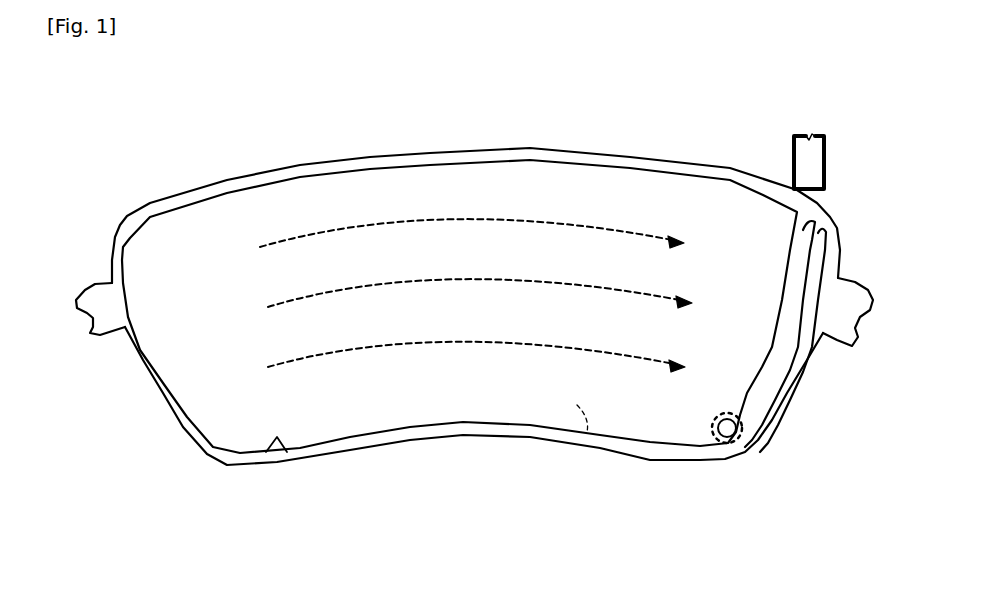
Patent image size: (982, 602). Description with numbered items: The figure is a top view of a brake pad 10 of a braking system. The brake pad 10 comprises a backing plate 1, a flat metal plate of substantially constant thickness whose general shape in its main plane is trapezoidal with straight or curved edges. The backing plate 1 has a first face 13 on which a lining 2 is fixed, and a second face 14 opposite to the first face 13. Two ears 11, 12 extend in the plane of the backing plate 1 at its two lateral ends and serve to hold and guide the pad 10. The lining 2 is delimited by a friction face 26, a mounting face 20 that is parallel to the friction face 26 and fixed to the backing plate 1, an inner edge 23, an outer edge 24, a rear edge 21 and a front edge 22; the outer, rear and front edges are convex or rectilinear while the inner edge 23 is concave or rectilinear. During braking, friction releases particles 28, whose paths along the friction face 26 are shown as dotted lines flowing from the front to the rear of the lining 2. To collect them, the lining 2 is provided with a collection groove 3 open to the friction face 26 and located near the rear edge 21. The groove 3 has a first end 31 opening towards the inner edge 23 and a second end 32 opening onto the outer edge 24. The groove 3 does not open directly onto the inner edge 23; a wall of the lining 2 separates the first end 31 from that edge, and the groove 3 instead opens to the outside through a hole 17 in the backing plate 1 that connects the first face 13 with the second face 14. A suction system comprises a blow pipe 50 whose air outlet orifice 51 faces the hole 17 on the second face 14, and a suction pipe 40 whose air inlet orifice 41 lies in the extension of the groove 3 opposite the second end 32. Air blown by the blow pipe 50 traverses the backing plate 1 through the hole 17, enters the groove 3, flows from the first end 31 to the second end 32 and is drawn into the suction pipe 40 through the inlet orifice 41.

The backing plate 1 is at (475, 438).
The lining 2 is at (715, 217).
The collection groove 3 is at (785, 328).
The brake pad 10 is at (200, 141).
The ear 11 is at (842, 310).
The ear 12 is at (102, 303).
The first face 13 is at (268, 448).
The second face 14 is at (585, 443).
The hole 17 is at (757, 447).
The mounting face 20 is at (578, 200).
The rear edge 21 is at (790, 385).
The front edge 22 is at (160, 390).
The inner edge 23 is at (410, 427).
The outer edge 24 is at (525, 160).
The friction face 26 is at (340, 257).
The particles 28 is at (540, 272).
The first end 31 is at (728, 417).
The second end 32 is at (837, 227).
The suction pipe 40 is at (805, 161).
The air inlet orifice 41 is at (803, 208).
The blow pipe 50 is at (678, 457).
The air outlet orifice 51 is at (717, 457).